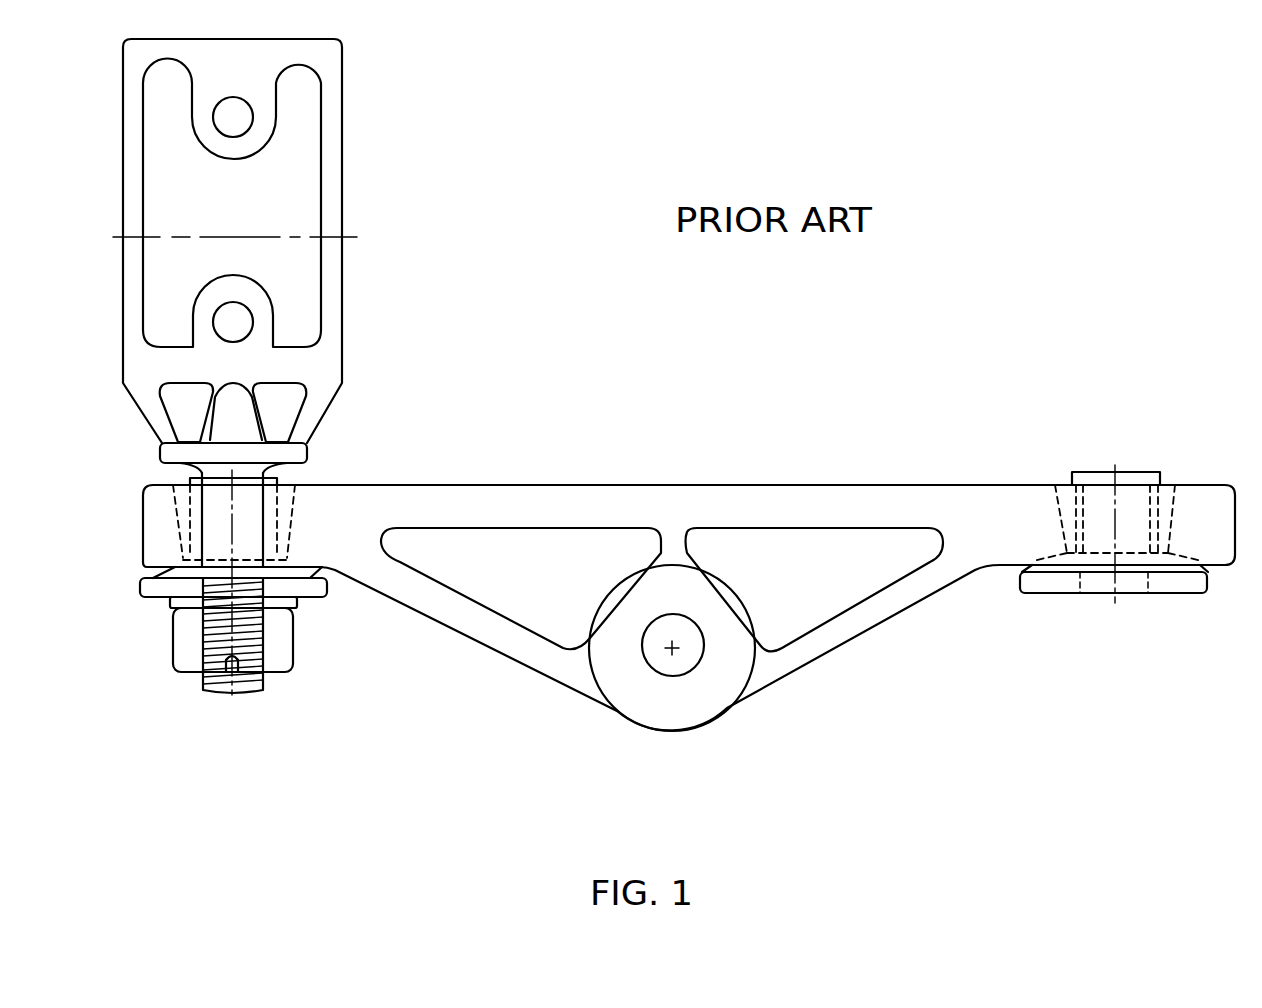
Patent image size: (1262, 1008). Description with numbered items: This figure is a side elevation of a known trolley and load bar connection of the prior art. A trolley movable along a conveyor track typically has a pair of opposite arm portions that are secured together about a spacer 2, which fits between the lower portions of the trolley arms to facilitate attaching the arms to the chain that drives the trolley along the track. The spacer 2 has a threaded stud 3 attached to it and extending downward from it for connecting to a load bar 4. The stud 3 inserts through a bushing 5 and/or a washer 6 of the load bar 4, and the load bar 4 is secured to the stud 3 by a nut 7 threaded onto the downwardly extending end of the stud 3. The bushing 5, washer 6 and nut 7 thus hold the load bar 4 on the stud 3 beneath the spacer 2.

The spacer 2 is at (372, 158).
The threaded stud 3 is at (220, 688).
The load bar 4 is at (667, 495).
The bushing 5 is at (1157, 473).
The washer 6 is at (1178, 590).
The nut 7 is at (292, 643).